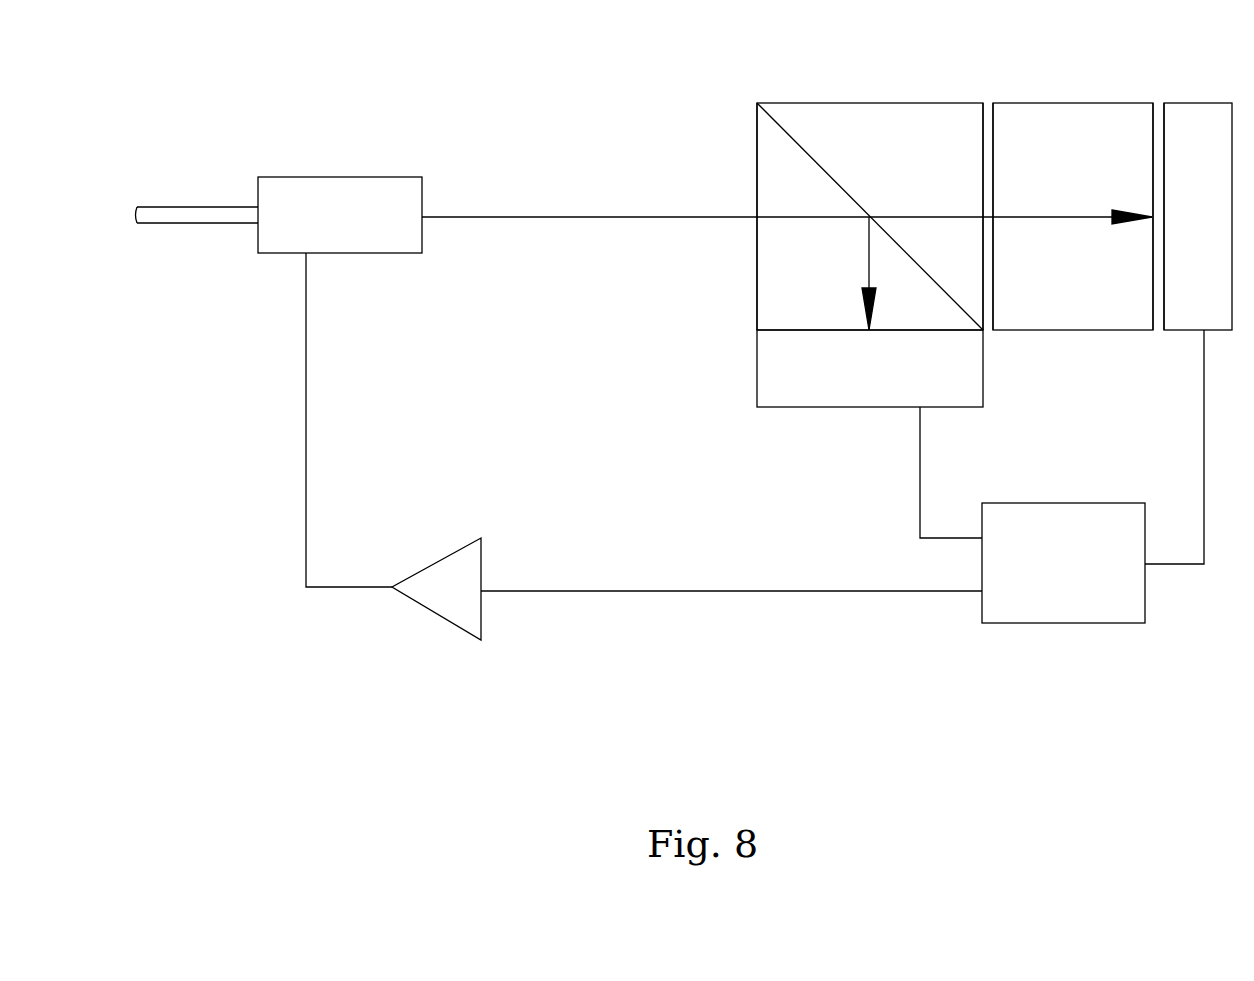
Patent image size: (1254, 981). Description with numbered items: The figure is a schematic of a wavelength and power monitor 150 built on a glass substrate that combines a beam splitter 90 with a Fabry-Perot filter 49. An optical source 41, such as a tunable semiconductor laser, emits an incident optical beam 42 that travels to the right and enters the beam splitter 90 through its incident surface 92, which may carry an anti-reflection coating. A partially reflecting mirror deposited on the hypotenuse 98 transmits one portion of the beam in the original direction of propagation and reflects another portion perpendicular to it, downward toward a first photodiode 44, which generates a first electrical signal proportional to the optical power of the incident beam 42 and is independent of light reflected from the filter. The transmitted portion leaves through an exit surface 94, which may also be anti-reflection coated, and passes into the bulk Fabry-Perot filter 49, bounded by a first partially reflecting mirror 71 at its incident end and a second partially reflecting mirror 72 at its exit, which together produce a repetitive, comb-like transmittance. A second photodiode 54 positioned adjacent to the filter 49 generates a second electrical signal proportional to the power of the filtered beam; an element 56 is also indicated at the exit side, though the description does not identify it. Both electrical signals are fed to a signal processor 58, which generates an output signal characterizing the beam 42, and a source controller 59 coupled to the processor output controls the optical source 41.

The optical source 41 is at (332, 175).
The incident optical beam 42 is at (662, 213).
The wavelength and power monitor 150 is at (1000, 67).
The beam splitter 90 is at (856, 126).
The hypotenuse 98 is at (816, 168).
The incident surface 92 is at (756, 248).
The first partially reflecting mirror 71 is at (988, 110).
The exit surface 94 is at (982, 160).
The Fabry-Perot filter 49 is at (1063, 102).
The second partially reflecting mirror 72 is at (1160, 108).
The second photodiode 54 is at (1174, 102).
The electrode lead 56 is at (1158, 316).
The first photodiode 44 is at (756, 409).
The signal processor 58 is at (1006, 501).
The source controller 59 is at (476, 537).